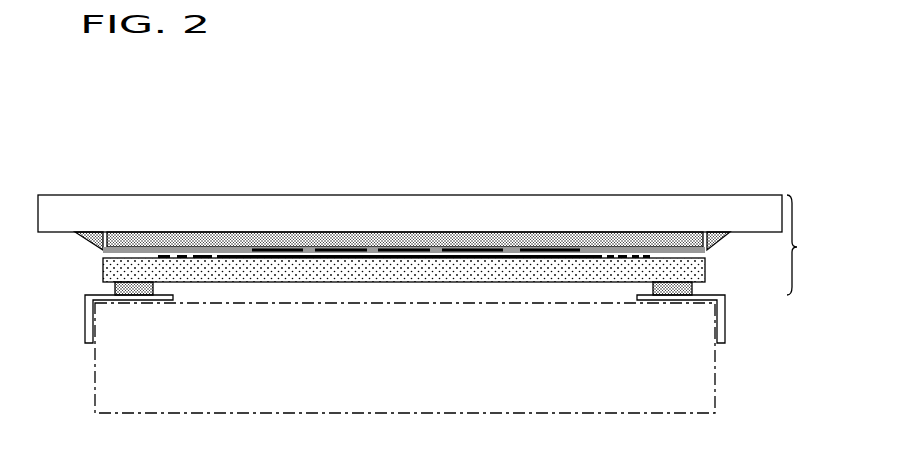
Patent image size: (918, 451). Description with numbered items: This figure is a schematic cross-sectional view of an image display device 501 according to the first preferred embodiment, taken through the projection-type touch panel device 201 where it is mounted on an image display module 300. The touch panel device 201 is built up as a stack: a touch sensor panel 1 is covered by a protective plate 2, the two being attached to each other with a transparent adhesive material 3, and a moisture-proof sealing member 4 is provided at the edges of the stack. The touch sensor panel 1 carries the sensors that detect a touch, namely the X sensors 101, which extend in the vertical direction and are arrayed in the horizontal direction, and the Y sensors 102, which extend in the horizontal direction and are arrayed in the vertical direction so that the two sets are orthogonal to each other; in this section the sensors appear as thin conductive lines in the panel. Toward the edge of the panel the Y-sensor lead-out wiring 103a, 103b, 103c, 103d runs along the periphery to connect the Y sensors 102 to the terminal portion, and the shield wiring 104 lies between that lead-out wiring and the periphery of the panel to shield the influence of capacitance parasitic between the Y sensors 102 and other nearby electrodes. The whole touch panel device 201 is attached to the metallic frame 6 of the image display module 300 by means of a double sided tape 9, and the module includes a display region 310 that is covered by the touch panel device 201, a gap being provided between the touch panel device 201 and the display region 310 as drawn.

The image display device 501 is at (85, 108).
The display region 310 is at (390, 297).
The protective plate 2 is at (433, 200).
The transparent adhesive material 3 is at (510, 235).
The moisture-proof sealing member 4 is at (723, 240).
The touch sensor panel 1 is at (707, 270).
The projection-type touch panel device 201 is at (816, 245).
The double sided tape 9 is at (705, 285).
The metallic frame 6 is at (720, 332).
The image display module 300 is at (690, 378).
The Y sensors 102 is at (282, 259).
The X sensors 101 is at (333, 253).
The Y-sensor lead-out wiring 103a is at (584, 328).
The Y-sensor lead-out wiring 103b is at (538, 333).
The Y-sensor lead-out wiring 103c is at (520, 312).
The Y-sensor lead-out wiring 103d is at (510, 296).
The shield wiring 104 is at (613, 315).